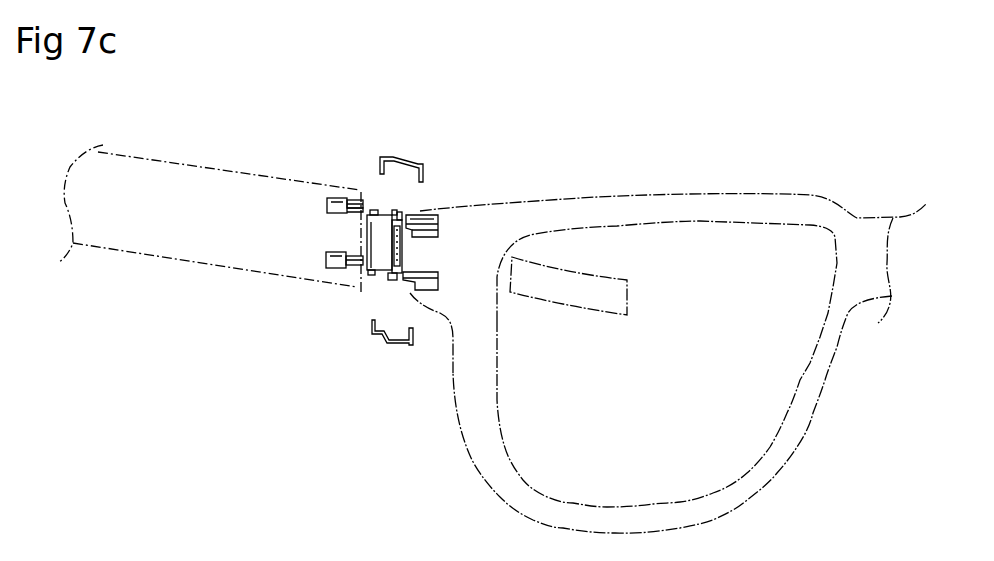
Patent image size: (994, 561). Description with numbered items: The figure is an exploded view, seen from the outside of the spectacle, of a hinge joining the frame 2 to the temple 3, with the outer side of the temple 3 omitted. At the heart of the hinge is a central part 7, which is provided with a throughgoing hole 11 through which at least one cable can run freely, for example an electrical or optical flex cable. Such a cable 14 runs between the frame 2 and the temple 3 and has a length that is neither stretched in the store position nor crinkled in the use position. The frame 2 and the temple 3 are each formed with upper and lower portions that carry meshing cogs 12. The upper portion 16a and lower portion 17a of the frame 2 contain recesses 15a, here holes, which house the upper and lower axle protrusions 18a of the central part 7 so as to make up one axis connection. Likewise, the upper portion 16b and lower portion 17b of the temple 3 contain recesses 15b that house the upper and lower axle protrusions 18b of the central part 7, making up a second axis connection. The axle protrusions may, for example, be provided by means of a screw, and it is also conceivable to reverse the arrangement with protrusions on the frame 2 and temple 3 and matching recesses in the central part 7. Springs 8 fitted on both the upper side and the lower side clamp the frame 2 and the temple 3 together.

The frame 2 is at (703, 210).
The temple 3 is at (123, 197).
The central part 7 is at (375, 233).
The springs 8 is at (405, 156).
The throughgoing hole 11 is at (420, 250).
The meshing cogs 12 is at (370, 212).
The cable 14 is at (575, 288).
The recesses of the frame portions 15a is at (424, 220).
The recesses of the temple portions 15b is at (343, 203).
The upper portion of the frame 16a is at (440, 230).
The upper portion of the temple 16b is at (358, 200).
The lower portion of the frame 17a is at (413, 293).
The lower portion of the temple 17b is at (350, 268).
The axle protrusions toward the frame 18a is at (417, 213).
The axle protrusions toward the temple 18b is at (370, 275).